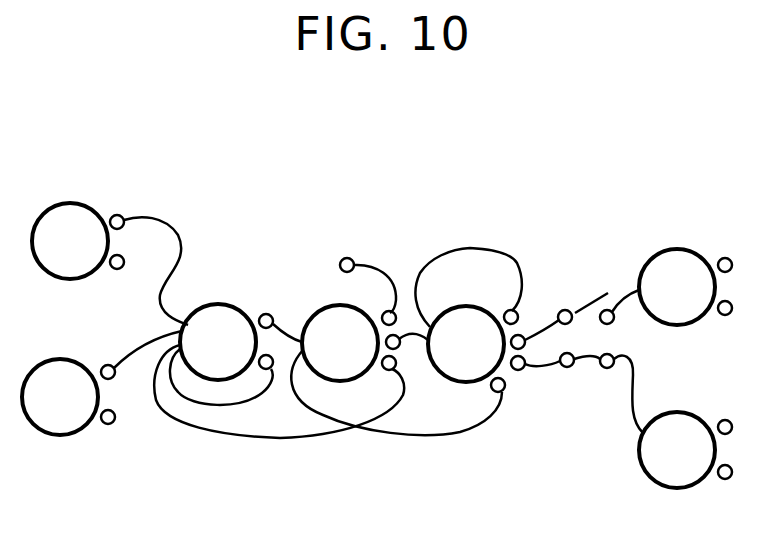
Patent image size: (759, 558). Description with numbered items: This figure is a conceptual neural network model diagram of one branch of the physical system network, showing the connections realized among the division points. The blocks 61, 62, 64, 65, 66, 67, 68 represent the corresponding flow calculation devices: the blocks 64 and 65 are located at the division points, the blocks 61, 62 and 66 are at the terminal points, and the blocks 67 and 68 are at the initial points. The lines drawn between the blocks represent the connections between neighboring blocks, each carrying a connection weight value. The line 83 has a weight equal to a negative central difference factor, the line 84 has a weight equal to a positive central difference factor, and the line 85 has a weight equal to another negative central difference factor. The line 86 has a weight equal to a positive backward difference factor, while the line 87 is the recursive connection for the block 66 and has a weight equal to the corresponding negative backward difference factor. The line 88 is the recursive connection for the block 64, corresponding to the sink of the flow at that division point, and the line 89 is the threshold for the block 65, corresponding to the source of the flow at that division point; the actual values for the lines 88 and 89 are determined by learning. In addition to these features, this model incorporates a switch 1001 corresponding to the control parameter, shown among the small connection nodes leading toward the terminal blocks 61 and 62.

The block 61 is at (672, 287).
The block 62 is at (673, 422).
The block 64 is at (476, 349).
The block 65 is at (351, 343).
The block 66 is at (226, 342).
The block 67 is at (78, 241).
The block 68 is at (68, 397).
The line 83 is at (422, 442).
The line 84 is at (405, 327).
The line 85 is at (253, 442).
The line 86 is at (287, 325).
The line 87 is at (247, 404).
The line 88 is at (495, 248).
The line 89 is at (378, 260).
The switch 1001 is at (587, 366).